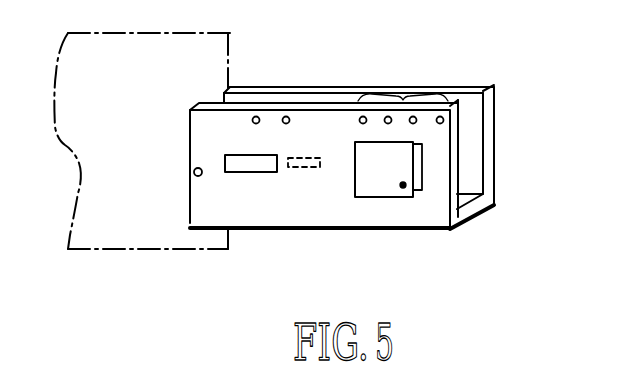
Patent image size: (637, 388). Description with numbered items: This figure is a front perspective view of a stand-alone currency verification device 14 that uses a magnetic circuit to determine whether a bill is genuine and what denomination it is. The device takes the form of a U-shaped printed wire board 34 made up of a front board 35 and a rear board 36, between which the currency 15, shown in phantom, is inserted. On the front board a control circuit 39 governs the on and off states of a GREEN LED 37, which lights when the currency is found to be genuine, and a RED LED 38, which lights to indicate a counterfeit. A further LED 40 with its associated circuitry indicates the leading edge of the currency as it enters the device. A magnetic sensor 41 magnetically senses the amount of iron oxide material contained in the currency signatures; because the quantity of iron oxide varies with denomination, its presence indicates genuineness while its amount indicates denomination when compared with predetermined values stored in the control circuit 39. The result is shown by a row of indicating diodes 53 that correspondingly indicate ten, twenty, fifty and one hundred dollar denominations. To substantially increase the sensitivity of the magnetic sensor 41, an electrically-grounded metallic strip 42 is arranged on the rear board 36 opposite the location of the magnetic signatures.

The stand-alone verification device 14 is at (353, 167).
The currency 15 is at (230, 8).
The U-shaped printed wire board 34 is at (184, 224).
The front board 35 is at (292, 104).
The rear board 36 is at (384, 136).
The GREEN LED 37 is at (255, 131).
The RED LED 38 is at (288, 131).
The control circuit 39 is at (398, 176).
The LED 40 is at (193, 172).
The magnetic sensor 41 is at (248, 172).
The electrically-grounded metallic strip 42 is at (318, 169).
The indicating diodes 53 is at (405, 86).